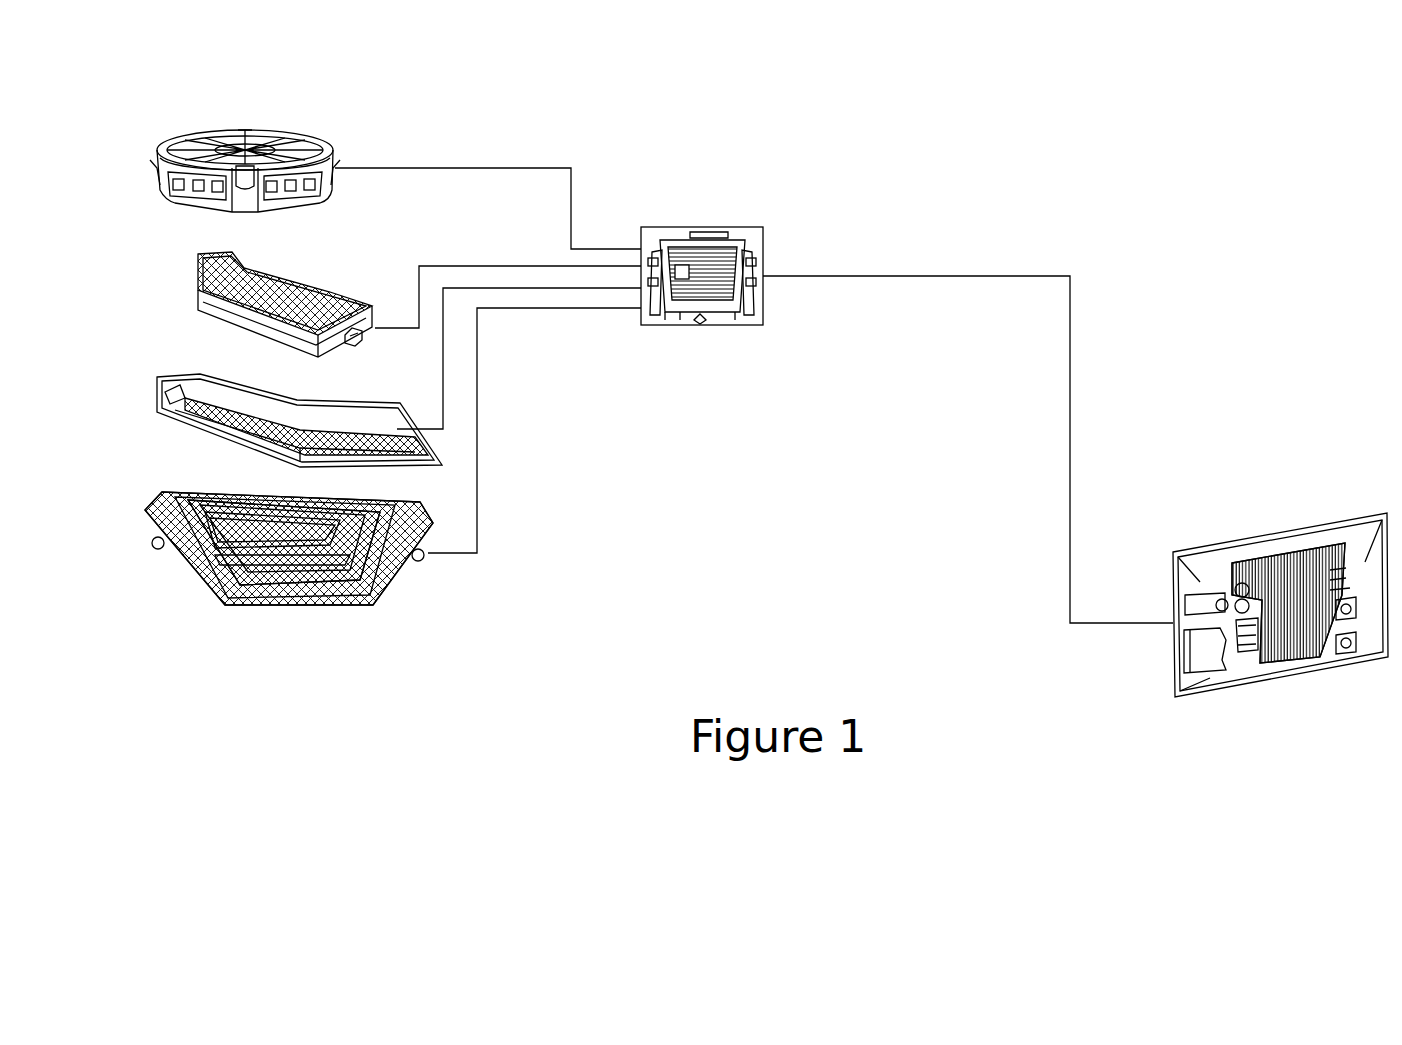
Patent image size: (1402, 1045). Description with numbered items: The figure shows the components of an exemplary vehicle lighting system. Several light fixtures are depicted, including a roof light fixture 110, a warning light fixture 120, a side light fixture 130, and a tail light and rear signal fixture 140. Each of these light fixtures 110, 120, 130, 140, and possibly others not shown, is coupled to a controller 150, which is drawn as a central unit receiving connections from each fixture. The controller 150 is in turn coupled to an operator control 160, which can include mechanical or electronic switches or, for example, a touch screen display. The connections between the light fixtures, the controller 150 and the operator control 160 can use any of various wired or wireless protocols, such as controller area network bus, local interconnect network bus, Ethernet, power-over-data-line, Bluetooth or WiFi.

The roof light fixture 110 is at (320, 143).
The warning light fixture 120 is at (287, 285).
The side light fixture 130 is at (297, 400).
The tail light and rear signal fixture 140 is at (378, 593).
The controller 150 is at (765, 243).
The operator control 160 is at (1300, 530).